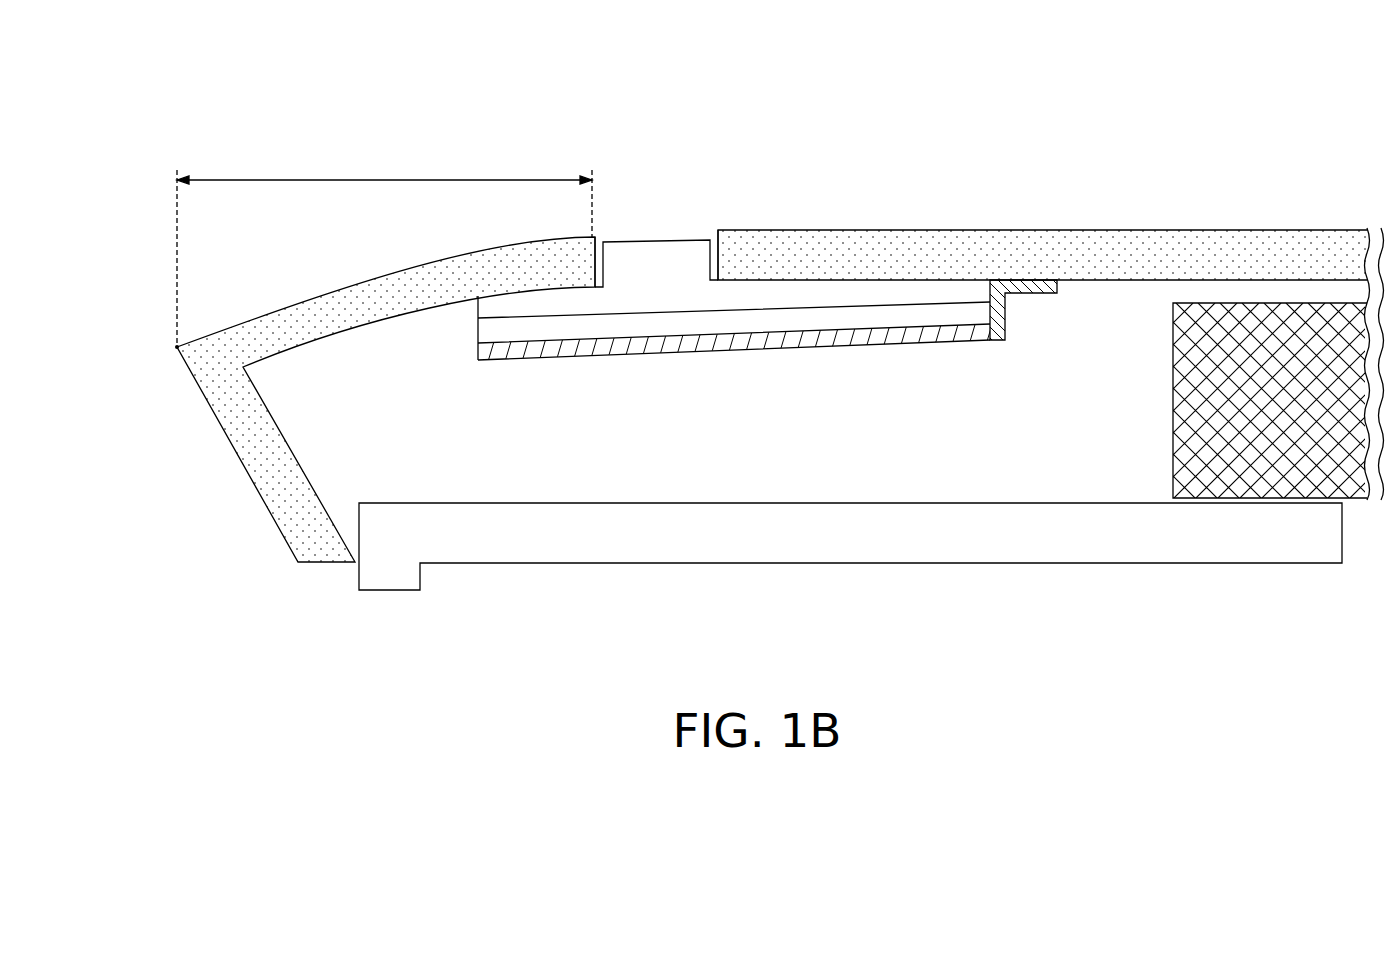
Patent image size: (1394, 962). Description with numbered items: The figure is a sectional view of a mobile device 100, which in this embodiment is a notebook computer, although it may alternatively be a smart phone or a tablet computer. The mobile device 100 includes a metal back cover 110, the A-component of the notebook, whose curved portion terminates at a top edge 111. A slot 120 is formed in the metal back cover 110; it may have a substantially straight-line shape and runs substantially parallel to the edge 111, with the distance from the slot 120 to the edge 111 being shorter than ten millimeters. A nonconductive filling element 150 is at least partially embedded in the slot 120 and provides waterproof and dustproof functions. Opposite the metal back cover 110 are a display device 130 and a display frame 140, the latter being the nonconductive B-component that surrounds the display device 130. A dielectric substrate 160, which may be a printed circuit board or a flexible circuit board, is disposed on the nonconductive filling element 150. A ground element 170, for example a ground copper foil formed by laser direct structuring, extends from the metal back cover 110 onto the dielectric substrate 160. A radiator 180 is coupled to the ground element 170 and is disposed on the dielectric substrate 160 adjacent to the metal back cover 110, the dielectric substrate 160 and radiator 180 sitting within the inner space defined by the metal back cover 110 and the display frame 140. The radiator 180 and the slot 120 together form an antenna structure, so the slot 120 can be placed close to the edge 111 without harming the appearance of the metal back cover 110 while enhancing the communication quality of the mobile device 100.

The mobile device 100 is at (112, 88).
The metal back cover 110 is at (355, 290).
The edge 111 is at (177, 347).
The slot 120 is at (656, 234).
The display device 130 is at (1190, 402).
The display frame 140 is at (810, 548).
The nonconductive filling element 150 is at (683, 250).
The dielectric substrate 160 is at (968, 310).
The ground element 170 is at (967, 338).
The radiator 180 is at (695, 340).